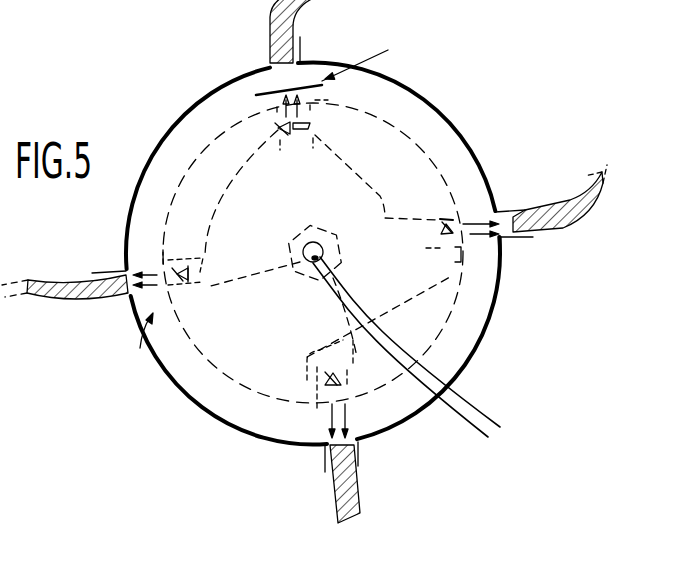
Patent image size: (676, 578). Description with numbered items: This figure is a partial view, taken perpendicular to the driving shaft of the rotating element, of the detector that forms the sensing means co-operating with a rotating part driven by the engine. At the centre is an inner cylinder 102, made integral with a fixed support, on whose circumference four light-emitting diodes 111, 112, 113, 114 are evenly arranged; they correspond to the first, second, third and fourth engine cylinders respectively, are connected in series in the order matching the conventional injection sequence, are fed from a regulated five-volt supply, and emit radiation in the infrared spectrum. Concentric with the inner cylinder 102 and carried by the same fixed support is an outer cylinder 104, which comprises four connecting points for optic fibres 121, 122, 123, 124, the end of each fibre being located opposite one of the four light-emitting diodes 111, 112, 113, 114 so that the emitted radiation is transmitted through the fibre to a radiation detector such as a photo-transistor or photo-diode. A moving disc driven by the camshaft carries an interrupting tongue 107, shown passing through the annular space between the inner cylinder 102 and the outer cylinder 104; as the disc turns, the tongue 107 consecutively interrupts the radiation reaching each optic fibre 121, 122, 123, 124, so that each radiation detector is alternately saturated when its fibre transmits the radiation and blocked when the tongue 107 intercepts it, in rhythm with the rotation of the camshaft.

The inner cylinder 102 is at (236, 394).
The outer cylinder 104 is at (276, 452).
The interrupting tongue 107 is at (374, 58).
The light-emitting diode 111 is at (312, 123).
The light-emitting diode 112 is at (184, 287).
The light-emitting diode 113 is at (441, 223).
The light-emitting diode 114 is at (336, 380).
The optic fibre 121 is at (318, 6).
The optic fibre 122 is at (50, 300).
The optic fibre 123 is at (576, 186).
The optic fibre 124 is at (354, 511).